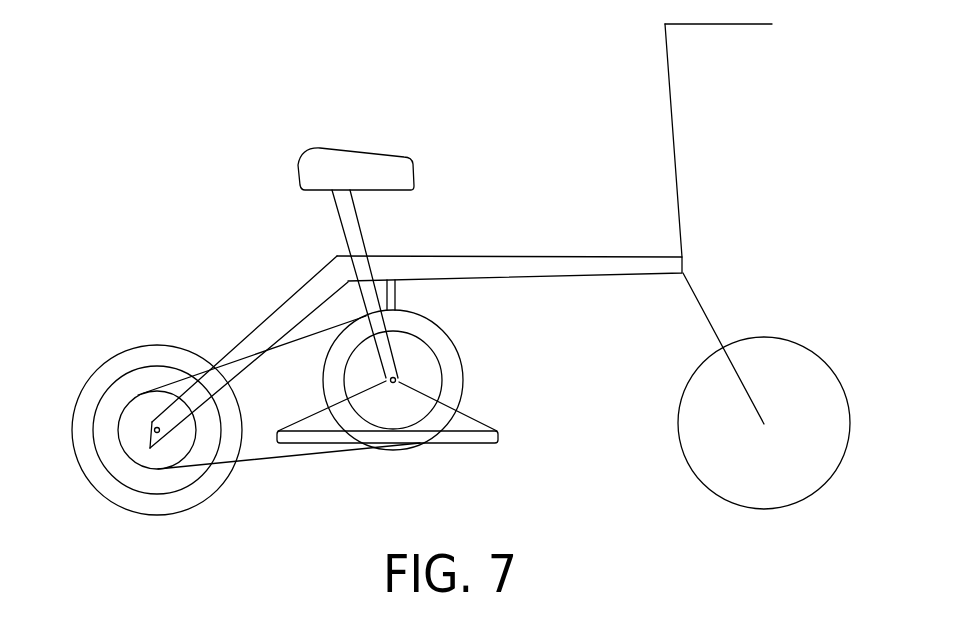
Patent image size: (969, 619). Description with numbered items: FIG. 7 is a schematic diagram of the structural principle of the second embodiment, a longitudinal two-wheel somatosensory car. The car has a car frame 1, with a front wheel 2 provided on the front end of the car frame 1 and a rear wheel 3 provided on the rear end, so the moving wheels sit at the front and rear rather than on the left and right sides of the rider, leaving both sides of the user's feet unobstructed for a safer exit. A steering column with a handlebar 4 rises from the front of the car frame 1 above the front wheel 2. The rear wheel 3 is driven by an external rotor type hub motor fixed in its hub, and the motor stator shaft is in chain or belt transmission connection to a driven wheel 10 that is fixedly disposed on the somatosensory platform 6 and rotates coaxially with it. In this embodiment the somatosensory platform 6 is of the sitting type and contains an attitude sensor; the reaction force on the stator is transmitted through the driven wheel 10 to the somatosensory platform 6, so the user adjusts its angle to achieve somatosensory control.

The car frame 1 is at (509, 241).
The front wheel 2 is at (775, 421).
The rear wheel 3 is at (75, 411).
The steering column with handlebar 4 is at (723, 224).
The somatosensory platform 6 is at (395, 430).
The driven wheel 10 is at (460, 358).